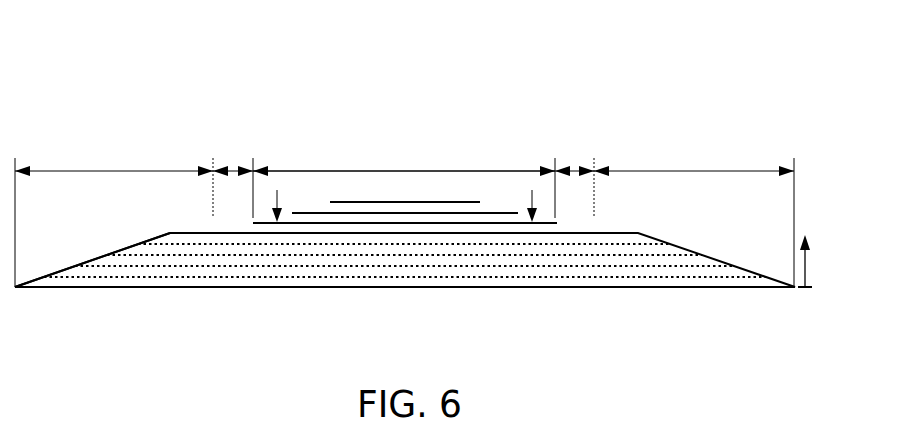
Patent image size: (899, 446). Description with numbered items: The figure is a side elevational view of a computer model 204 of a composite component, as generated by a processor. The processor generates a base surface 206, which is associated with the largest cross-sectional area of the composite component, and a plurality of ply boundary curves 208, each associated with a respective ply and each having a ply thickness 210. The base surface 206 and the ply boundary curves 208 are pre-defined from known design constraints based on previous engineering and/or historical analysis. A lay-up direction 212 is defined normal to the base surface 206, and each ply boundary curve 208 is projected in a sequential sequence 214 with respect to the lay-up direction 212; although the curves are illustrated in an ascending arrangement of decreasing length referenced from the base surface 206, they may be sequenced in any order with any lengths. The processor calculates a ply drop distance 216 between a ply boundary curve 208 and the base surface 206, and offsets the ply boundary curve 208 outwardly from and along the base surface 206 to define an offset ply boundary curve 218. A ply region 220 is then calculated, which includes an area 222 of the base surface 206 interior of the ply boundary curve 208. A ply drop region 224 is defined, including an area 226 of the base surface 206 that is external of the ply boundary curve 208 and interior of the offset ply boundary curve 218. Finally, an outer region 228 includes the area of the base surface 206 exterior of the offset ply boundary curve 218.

The computer model 204 is at (120, 50).
The base surface 206 is at (507, 240).
The ply boundary curve 208 is at (423, 230).
The ply thickness 210 is at (277, 240).
The lay-up direction 212 is at (806, 272).
The sequential sequence 214 is at (475, 220).
The ply drop distance 216 is at (532, 240).
The offset ply boundary curve 218 is at (78, 265).
The ply region 220 is at (400, 171).
The area 222 is at (268, 235).
The ply drop region 224 is at (232, 171).
The area 226 is at (225, 234).
The outer region 228 is at (93, 171).